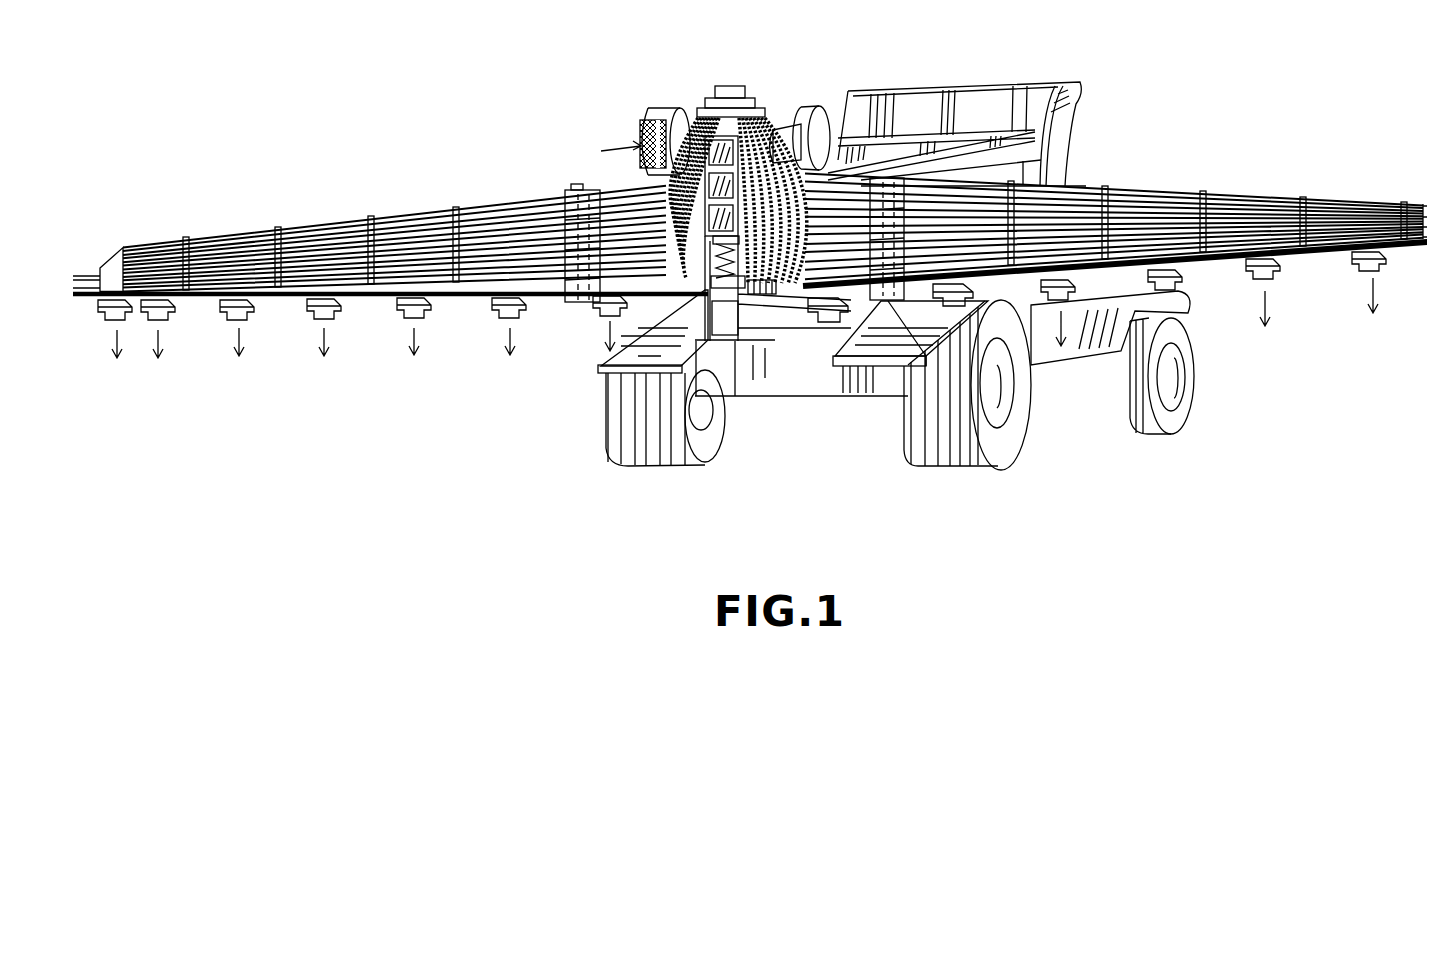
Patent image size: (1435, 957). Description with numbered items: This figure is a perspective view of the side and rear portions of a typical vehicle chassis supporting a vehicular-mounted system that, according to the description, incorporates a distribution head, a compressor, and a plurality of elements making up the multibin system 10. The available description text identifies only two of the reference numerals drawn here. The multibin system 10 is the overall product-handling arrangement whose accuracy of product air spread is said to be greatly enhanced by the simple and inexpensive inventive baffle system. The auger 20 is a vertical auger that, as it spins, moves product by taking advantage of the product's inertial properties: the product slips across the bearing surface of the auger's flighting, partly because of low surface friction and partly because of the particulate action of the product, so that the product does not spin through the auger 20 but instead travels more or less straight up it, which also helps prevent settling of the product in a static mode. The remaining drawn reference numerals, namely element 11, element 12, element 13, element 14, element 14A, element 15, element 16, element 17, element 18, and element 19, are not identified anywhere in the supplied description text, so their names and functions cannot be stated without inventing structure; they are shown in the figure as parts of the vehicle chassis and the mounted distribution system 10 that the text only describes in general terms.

The multibin system 10 is at (486, 164).
The trailer vehicle 11 is at (1060, 357).
The headboard panel 12 is at (900, 150).
The mast cap 13 is at (747, 93).
The rollers 14 is at (670, 103).
The lower roller 14A is at (753, 282).
The tube bundles 15 is at (323, 253).
The flexible hoses 16 is at (650, 195).
The nozzle brackets 17 is at (300, 310).
The coupling 18 is at (793, 283).
The hatched roller face 19 is at (628, 112).
The auger 20 is at (735, 300).